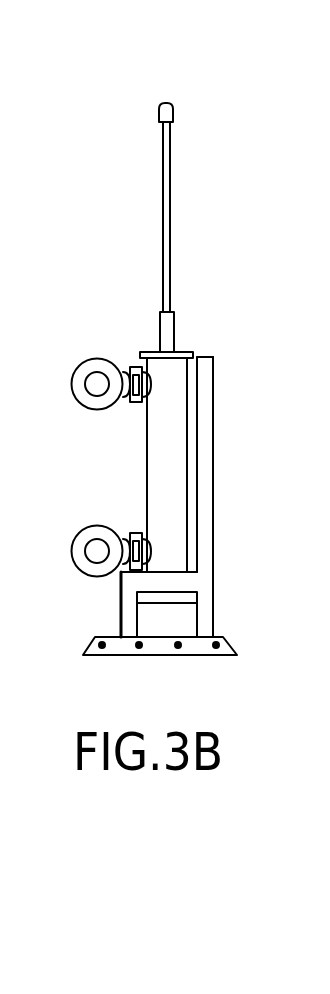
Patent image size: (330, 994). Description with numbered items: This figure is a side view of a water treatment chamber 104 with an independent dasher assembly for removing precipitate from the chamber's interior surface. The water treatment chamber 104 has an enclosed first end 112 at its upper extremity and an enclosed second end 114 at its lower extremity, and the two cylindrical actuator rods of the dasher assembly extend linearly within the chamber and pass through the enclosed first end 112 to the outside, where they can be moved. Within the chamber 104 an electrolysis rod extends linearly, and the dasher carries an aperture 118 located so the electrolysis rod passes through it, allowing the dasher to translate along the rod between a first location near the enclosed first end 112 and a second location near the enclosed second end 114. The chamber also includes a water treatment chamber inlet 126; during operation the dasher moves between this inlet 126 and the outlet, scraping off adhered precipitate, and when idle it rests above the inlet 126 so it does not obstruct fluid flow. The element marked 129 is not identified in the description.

The water treatment chamber 104 is at (165, 483).
The enclosed first end 112 is at (182, 351).
The antenna tip 129 is at (162, 102).
The water treatment chamber inlet 126 is at (132, 368).
The aperture 118 is at (125, 571).
The enclosed second end 114 is at (172, 572).